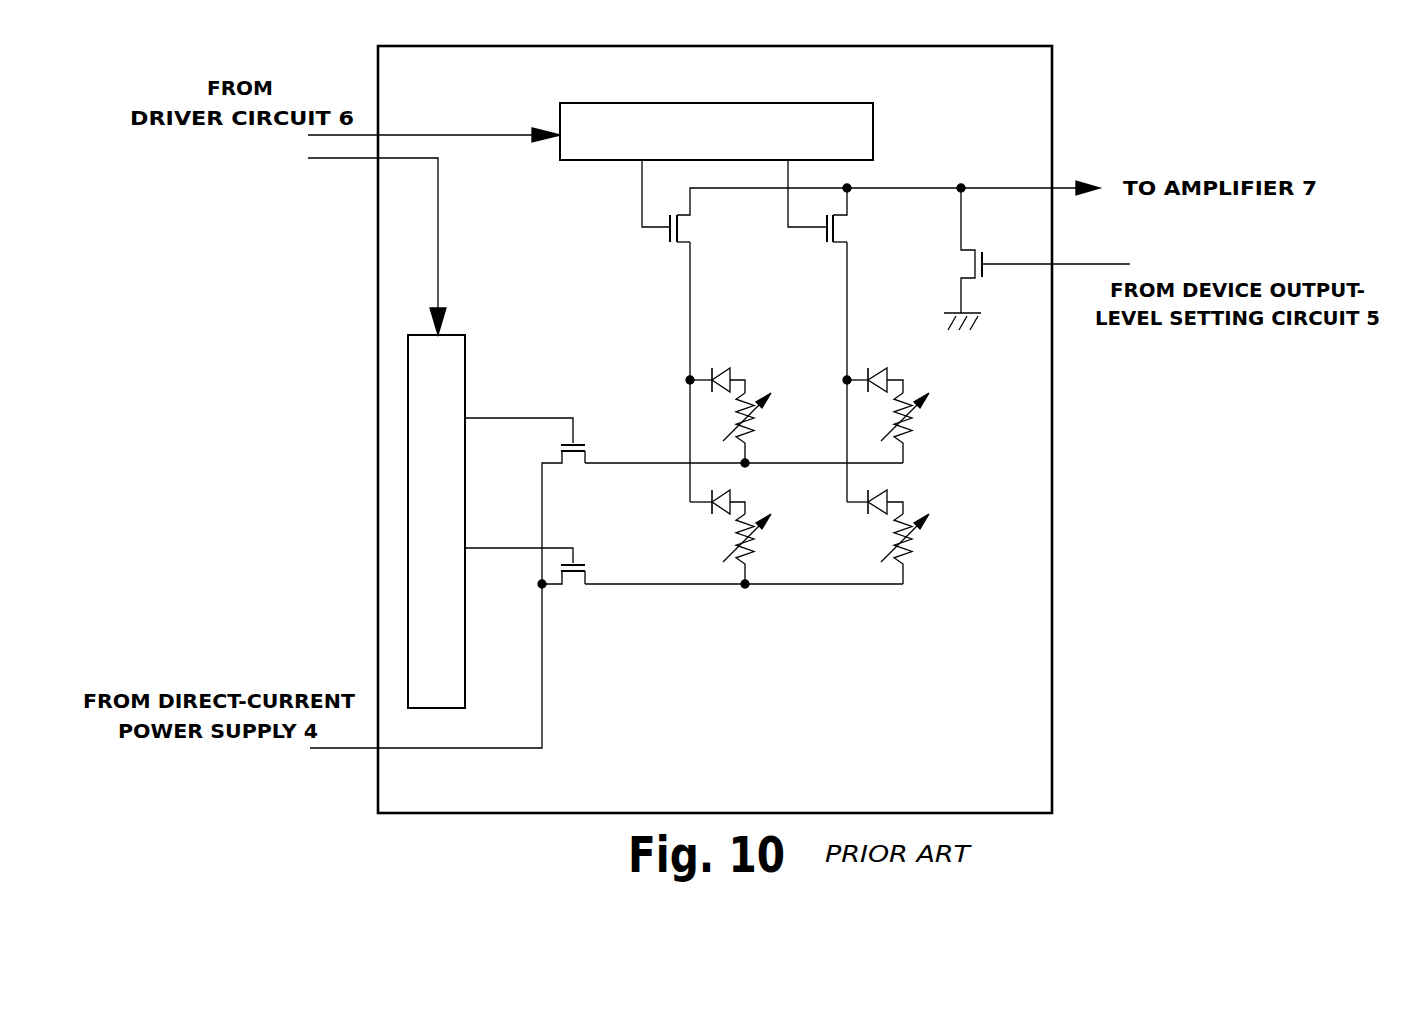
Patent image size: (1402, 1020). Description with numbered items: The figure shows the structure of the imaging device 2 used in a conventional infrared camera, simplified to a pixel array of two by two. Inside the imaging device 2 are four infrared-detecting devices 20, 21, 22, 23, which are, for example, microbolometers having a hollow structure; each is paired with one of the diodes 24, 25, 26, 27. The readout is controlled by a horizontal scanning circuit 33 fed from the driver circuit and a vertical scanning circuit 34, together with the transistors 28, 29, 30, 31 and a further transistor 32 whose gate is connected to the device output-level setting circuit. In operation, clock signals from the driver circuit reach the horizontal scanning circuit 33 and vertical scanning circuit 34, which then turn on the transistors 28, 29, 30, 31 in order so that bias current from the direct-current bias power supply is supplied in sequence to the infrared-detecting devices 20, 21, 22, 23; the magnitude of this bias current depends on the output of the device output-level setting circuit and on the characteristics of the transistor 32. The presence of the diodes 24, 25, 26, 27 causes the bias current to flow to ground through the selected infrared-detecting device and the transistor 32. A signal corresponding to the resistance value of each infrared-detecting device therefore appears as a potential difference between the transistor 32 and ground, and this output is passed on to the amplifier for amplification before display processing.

The imaging device 2 is at (1053, 88).
The infrared-detecting device 20 is at (765, 411).
The infrared-detecting device 21 is at (925, 411).
The infrared-detecting device 22 is at (765, 546).
The infrared-detecting device 23 is at (930, 534).
The diode 24 is at (722, 366).
The diode 25 is at (880, 366).
The diode 26 is at (721, 513).
The diode 27 is at (883, 513).
The transistor 28 is at (663, 230).
The transistor 29 is at (822, 230).
The transistor 30 is at (594, 443).
The transistor 31 is at (594, 555).
The transistor 32 is at (973, 244).
The horizontal scanning circuit 33 is at (860, 101).
The vertical scanning circuit 34 is at (467, 356).